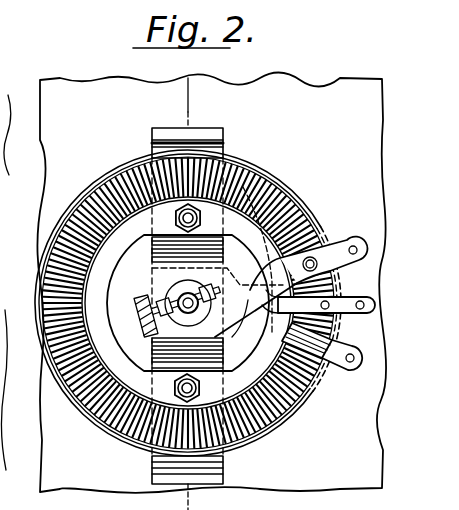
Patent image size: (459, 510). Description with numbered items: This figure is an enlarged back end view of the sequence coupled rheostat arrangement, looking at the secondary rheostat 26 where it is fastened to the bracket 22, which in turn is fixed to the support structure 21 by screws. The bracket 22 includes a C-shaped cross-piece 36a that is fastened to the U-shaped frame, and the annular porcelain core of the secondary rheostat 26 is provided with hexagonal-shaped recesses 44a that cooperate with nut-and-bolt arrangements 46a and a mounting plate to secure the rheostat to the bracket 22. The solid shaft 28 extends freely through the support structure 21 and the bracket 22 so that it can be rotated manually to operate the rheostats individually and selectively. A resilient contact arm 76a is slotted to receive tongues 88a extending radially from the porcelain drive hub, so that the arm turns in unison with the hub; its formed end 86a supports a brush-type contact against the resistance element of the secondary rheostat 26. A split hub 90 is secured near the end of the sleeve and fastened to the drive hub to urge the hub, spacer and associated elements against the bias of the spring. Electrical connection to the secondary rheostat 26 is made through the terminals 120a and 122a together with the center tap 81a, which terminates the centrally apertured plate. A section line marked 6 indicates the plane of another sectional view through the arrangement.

The support structure 21 is at (100, 130).
The section line 6 is at (206, 99).
The bracket 22 is at (231, 139).
The secondary rheostat 26 is at (260, 153).
The resilient contact arm 76a is at (248, 272).
The formed end of contact arm 86a is at (313, 232).
The terminal 122a is at (341, 237).
The center tap 81a is at (357, 297).
The tongues 88a is at (150, 302).
The solid shaft 28 is at (190, 314).
The split hub 90 is at (206, 316).
The hexagonal-shaped recesses 44a is at (94, 407).
The nut-and-bolt arrangements 46a is at (174, 404).
The C-shaped cross-piece 36a is at (247, 462).
The terminal 120a is at (338, 373).